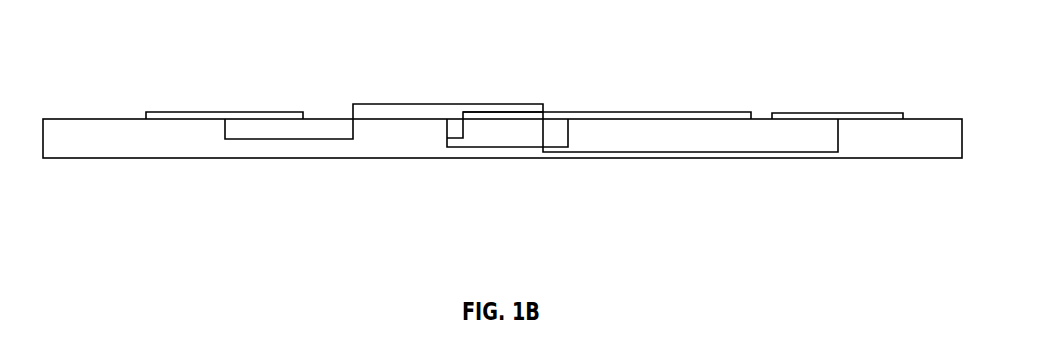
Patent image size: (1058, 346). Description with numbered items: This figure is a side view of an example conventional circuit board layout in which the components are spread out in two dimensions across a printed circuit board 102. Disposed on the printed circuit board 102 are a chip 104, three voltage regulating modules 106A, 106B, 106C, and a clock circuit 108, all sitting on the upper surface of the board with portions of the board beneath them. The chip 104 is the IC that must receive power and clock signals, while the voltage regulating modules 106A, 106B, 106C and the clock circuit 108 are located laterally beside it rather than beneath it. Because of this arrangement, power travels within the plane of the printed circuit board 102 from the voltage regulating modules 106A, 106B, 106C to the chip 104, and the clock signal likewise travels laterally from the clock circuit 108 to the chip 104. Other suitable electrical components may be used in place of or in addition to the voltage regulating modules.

The printed circuit board 102 is at (137, 151).
The chip 104 is at (448, 105).
The voltage regulating module 106A is at (225, 112).
The voltage regulating module 106B is at (673, 111).
The voltage regulating module 106C is at (543, 108).
The clock circuit 108 is at (833, 113).